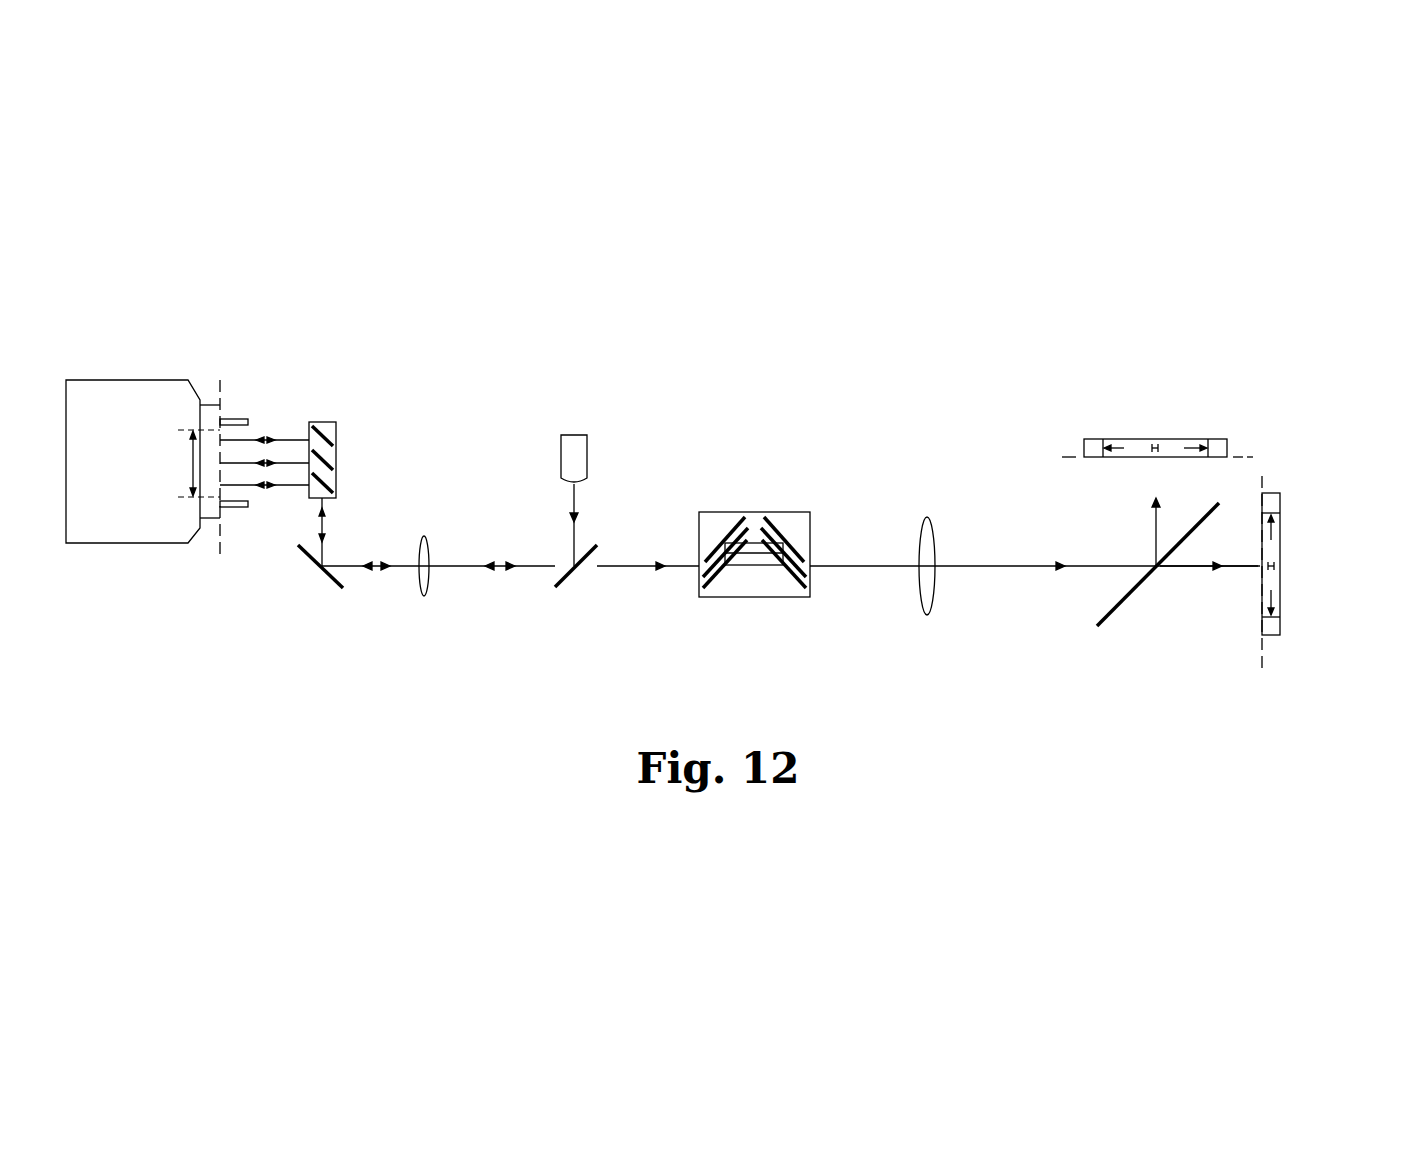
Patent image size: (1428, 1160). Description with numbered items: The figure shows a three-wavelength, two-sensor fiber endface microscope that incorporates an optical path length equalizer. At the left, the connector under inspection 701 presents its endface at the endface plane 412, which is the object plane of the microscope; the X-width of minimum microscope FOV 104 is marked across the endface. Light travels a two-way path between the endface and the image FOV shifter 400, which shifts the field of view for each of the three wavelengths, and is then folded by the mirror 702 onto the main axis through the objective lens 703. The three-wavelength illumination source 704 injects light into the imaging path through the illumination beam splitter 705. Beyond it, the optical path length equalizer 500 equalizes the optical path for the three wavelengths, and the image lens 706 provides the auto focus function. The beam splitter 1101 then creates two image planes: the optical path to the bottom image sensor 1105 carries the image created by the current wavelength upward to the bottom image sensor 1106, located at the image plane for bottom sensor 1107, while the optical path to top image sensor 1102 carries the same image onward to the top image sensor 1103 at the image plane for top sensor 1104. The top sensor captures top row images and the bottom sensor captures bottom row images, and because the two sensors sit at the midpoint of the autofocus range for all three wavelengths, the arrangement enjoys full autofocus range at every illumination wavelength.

The connector under inspection 701 is at (127, 377).
The X-width of minimum microscope FOV 104 is at (188, 463).
The endface plane 412 is at (220, 572).
The image FOV shifter 400 is at (329, 417).
The mirror 702 is at (318, 564).
The objective lens 703 is at (424, 533).
The three-wavelength illumination source 704 is at (574, 426).
The illumination beam splitter 705 is at (578, 575).
The optical path length equalizer 500 is at (750, 499).
The image lens 706 is at (922, 613).
The beam splitter 1101 is at (1103, 628).
The optical path to the bottom image sensor 1105 is at (1071, 520).
The optical path to top image sensor 1102 is at (1196, 620).
The bottom image sensor 1106 is at (1163, 437).
The image plane for bottom sensor 1107 is at (1050, 457).
The top image sensor 1103 is at (1290, 566).
The image plane for top sensor 1104 is at (1262, 672).